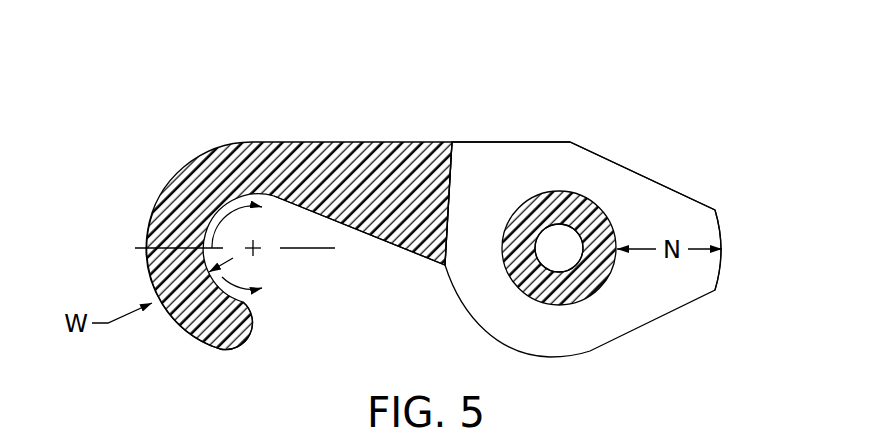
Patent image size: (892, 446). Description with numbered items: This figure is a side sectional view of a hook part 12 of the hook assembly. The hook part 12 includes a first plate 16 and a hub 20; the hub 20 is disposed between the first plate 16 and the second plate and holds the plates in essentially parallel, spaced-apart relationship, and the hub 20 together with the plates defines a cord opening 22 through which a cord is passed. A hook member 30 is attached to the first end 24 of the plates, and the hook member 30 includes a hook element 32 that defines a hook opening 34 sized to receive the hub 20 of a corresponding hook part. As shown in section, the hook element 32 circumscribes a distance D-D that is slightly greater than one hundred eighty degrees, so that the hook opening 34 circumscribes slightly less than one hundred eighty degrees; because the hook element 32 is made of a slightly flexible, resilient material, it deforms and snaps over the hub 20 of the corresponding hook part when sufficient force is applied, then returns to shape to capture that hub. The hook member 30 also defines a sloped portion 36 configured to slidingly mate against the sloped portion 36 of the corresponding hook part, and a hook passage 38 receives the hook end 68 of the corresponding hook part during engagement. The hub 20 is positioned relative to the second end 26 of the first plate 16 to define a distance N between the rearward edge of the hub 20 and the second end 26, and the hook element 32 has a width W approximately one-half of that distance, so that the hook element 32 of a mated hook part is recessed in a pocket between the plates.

The hook part 12 is at (440, 88).
The first plate 16 is at (611, 161).
The hub 20 is at (555, 192).
The cord opening 22 is at (562, 268).
The first end 24 is at (453, 155).
The second end 26 is at (724, 233).
The hook member 30 is at (272, 135).
The hook element 32 is at (190, 332).
The hook opening 34 is at (289, 259).
The sloped portion 36 is at (352, 228).
The hook passage 38 is at (530, 152).
The hook end 68 is at (258, 326).